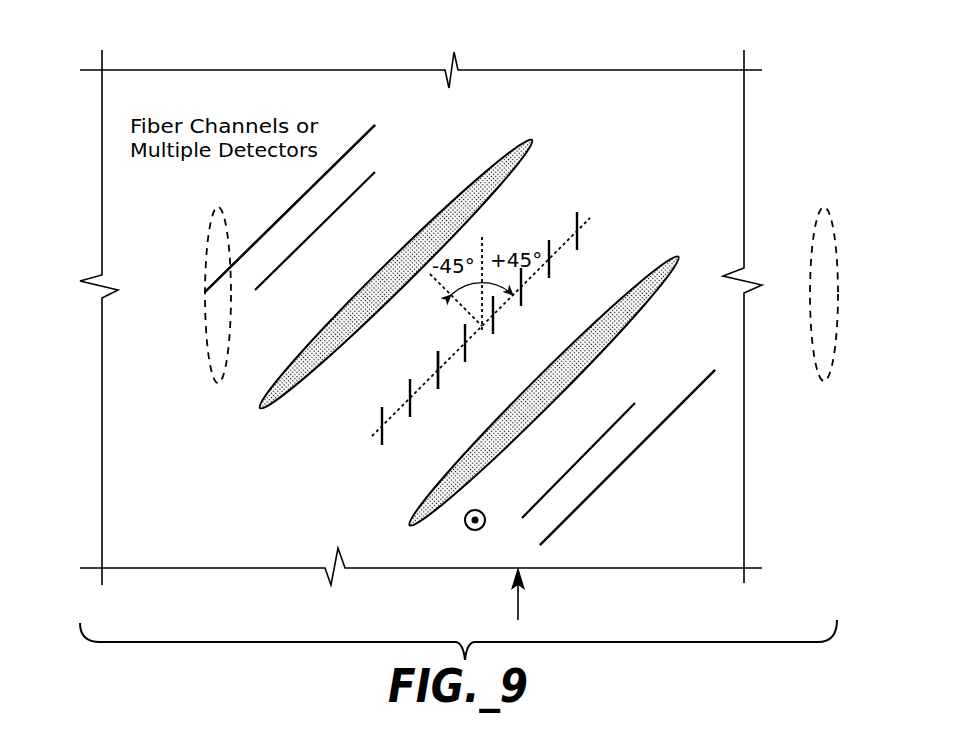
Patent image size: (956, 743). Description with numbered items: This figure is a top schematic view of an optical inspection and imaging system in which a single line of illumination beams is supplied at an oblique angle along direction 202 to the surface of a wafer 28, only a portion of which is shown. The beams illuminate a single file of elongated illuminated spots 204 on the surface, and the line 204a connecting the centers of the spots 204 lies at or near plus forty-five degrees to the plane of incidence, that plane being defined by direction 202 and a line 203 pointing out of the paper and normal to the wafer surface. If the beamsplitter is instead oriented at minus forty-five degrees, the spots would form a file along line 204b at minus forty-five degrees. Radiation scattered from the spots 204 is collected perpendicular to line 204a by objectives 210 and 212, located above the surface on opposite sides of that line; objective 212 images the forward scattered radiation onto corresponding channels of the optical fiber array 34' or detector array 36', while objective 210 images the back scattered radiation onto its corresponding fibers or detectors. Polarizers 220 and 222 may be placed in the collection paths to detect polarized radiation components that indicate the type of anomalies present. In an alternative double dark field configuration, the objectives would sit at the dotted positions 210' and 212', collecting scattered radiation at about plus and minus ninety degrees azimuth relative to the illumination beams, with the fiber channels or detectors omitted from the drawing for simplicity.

The wafer 28 is at (615, 54).
The optical fiber array 34' is at (355, 202).
The detector array 36' is at (355, 202).
The polarizer 222 is at (357, 195).
The objective 212 is at (396, 274).
The objective location for double dark field configuration 212' is at (175, 295).
The objective 210 is at (555, 391).
The objective location for double dark field configuration 210' is at (794, 277).
The polarizer 220 is at (632, 405).
The elongated illuminated spots 204 is at (380, 420).
The line connecting the centers of the spots 204a is at (443, 362).
The line connecting the centers of the spots at new locations 204b is at (455, 306).
The line normal to the surface 203 is at (475, 537).
The illumination direction 202 is at (518, 598).